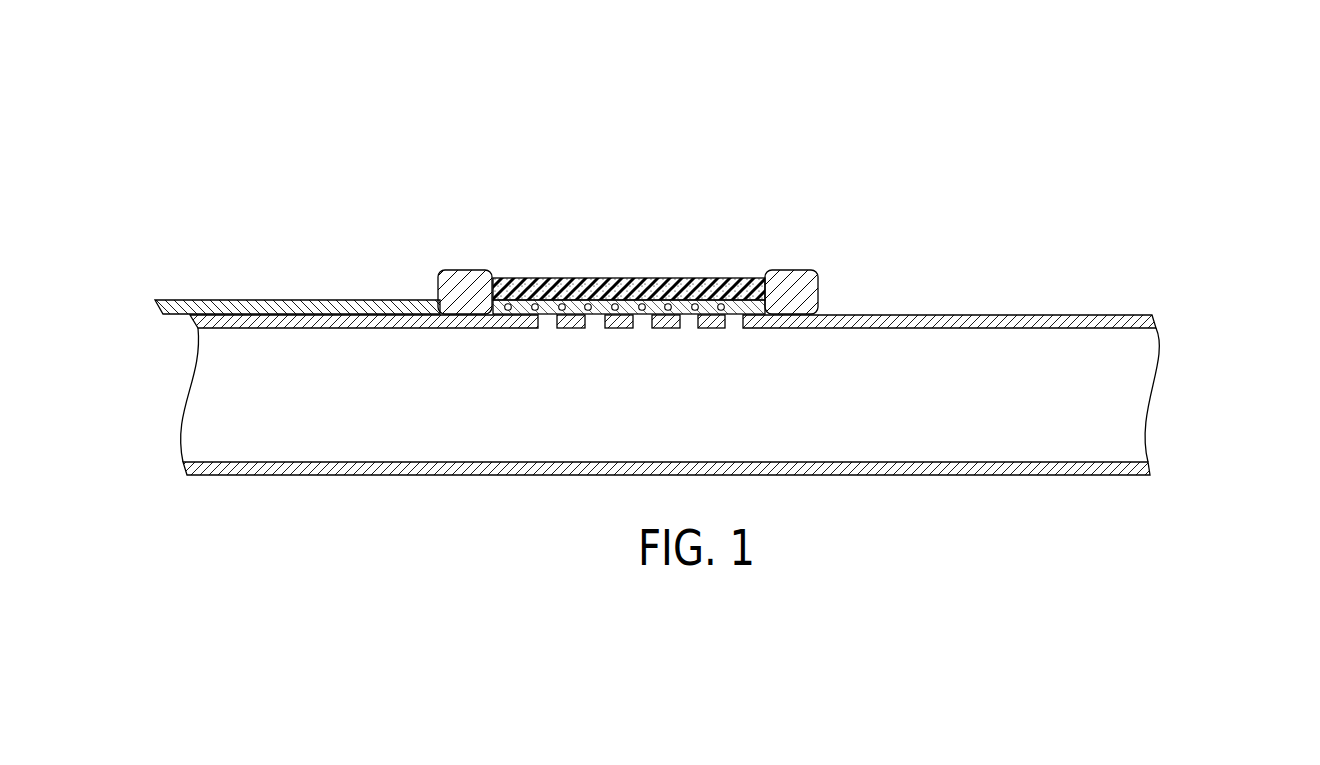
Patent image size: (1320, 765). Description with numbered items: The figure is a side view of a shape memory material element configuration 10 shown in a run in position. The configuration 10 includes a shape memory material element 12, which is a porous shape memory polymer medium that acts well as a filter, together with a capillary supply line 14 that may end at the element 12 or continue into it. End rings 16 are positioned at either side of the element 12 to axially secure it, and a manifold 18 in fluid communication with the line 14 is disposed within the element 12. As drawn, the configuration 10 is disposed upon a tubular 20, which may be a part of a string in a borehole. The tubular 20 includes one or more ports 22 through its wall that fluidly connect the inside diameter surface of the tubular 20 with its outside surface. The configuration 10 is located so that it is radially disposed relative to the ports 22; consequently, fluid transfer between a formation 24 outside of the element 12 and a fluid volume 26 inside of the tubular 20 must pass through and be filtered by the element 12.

The shape memory material element configuration 10 is at (346, 139).
The shape memory material element 12 is at (660, 283).
The capillary supply line 14 is at (322, 307).
The end rings 16 is at (462, 283).
The manifold 18 is at (600, 303).
The tubular 20 is at (960, 318).
The ports 22 is at (733, 325).
The formation 24 is at (563, 187).
The fluid volume 26 is at (1182, 380).